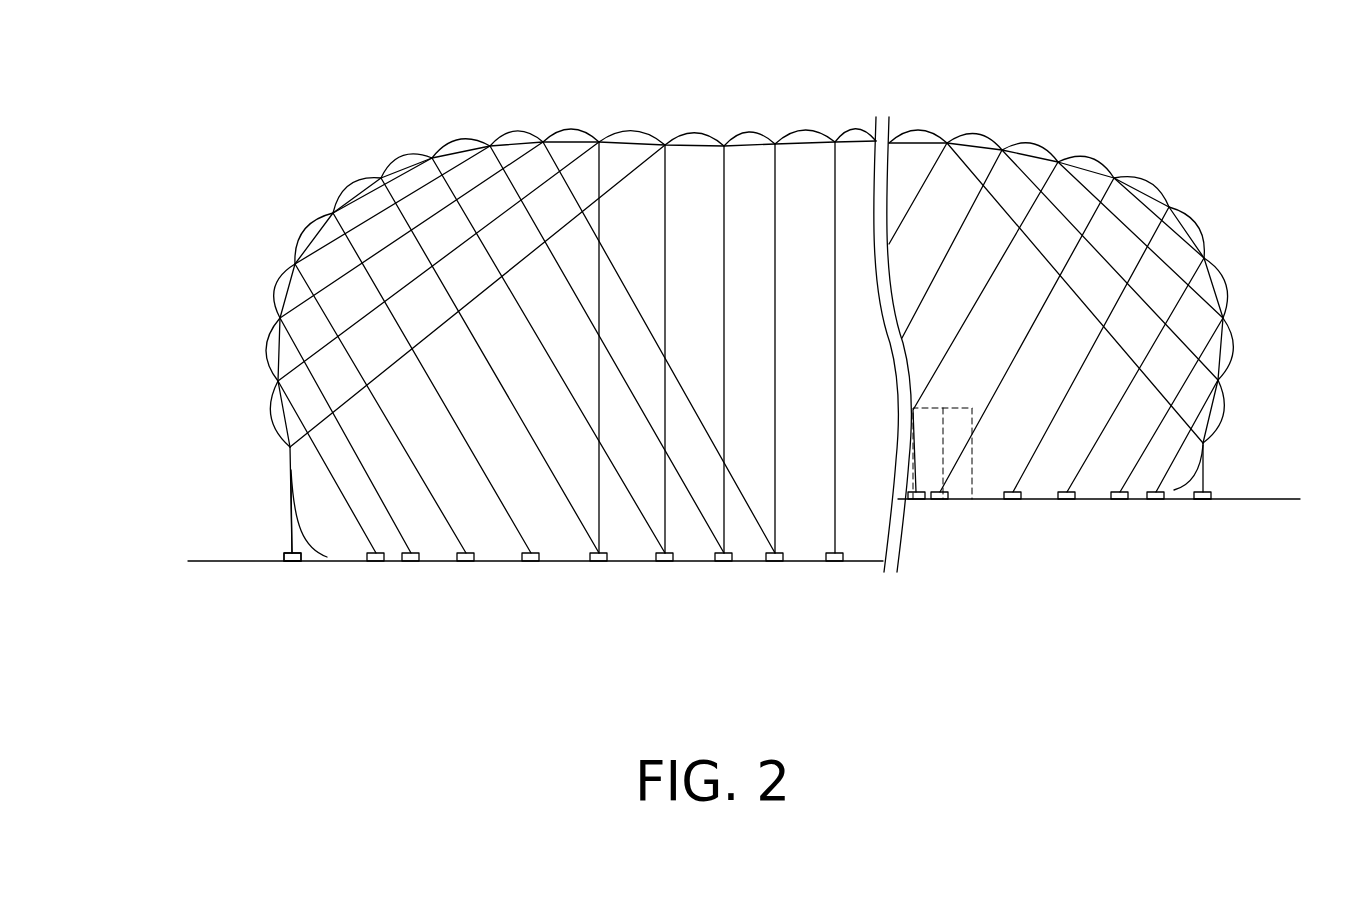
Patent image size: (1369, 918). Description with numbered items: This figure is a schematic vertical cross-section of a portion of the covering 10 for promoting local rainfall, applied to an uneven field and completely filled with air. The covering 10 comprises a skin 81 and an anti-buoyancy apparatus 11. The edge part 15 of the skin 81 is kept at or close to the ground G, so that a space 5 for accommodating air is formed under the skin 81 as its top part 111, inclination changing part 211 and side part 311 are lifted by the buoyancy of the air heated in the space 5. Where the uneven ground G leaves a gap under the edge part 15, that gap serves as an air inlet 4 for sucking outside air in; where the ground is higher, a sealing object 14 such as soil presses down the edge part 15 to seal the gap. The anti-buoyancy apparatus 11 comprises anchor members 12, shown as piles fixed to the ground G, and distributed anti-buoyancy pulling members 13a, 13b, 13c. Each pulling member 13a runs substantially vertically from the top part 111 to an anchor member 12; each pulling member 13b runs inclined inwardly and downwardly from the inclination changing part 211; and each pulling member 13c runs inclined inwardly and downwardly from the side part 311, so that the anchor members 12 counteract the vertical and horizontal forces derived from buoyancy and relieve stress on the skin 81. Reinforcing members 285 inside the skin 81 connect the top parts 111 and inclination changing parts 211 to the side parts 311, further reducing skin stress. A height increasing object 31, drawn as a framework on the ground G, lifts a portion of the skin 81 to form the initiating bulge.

The covering 10 is at (208, 91).
The anti-buoyancy apparatus 11 is at (183, 575).
The anchor member 12 is at (288, 562).
The anti-buoyancy pulling member 13a is at (667, 182).
The anti-buoyancy pulling member 13b is at (395, 185).
The anti-buoyancy pulling member 13c is at (323, 470).
The sealing object 14 is at (1183, 494).
The edge part 15 is at (308, 562).
The air inlet 4 is at (328, 562).
The space 5 is at (808, 473).
The height increasing object 31 is at (972, 463).
The skin 81 is at (1283, 53).
The top part 111 is at (628, 132).
The inclination changing part 211 is at (345, 200).
The side part 311 is at (268, 360).
The reinforcing member 285 is at (330, 263).
The ground G is at (1285, 499).